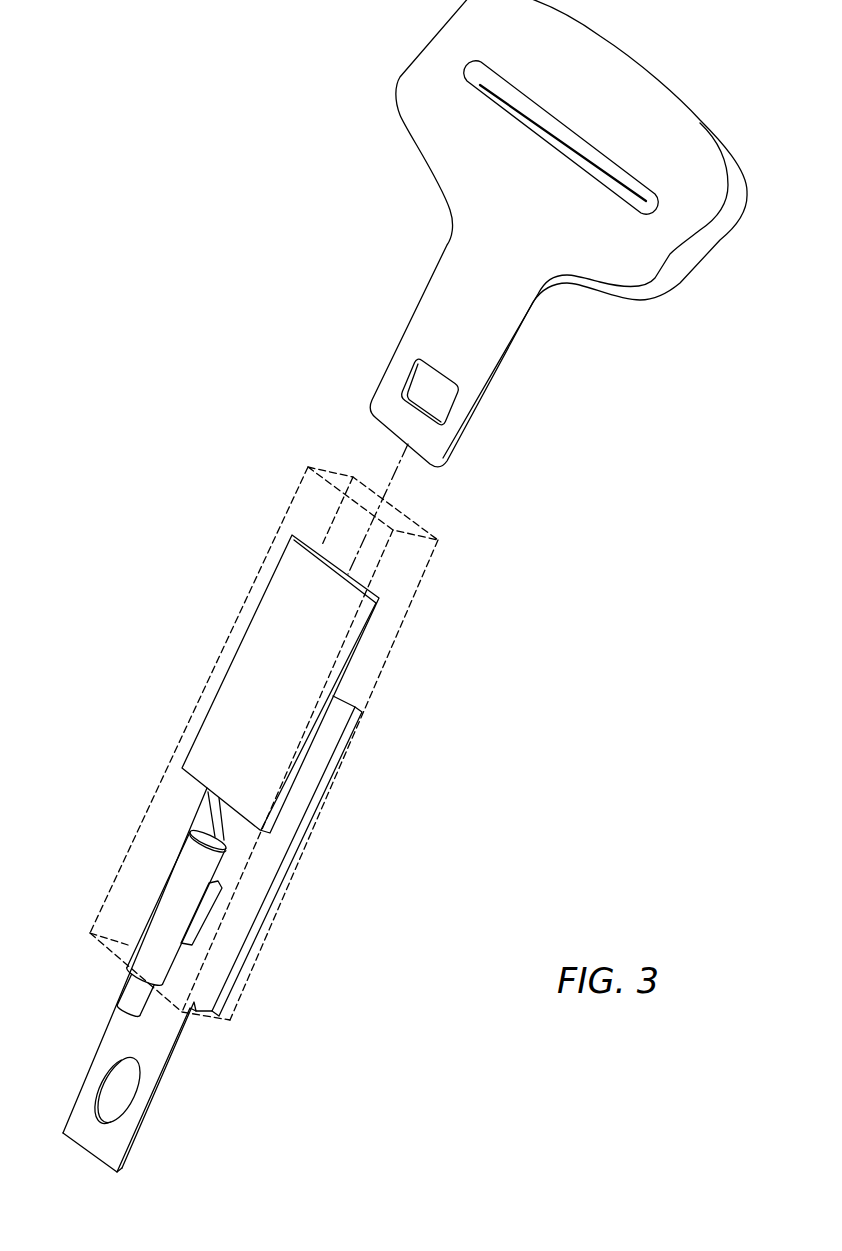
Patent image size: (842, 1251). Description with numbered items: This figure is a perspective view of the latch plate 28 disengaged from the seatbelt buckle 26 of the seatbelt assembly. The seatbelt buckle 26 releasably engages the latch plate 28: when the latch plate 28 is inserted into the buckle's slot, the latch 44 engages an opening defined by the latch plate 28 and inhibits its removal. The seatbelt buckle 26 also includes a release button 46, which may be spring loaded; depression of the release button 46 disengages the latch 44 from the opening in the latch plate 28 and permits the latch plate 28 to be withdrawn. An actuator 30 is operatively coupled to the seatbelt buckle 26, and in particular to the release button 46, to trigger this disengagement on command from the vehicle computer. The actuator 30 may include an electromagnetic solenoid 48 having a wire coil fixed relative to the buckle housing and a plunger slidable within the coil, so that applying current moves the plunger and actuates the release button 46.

The seatbelt buckle 26 is at (243, 597).
The latch plate 28 is at (402, 570).
The actuator 30 is at (215, 955).
The latch 44 is at (360, 623).
The release button 46 is at (315, 542).
The electromagnetic solenoid 48 is at (177, 890).